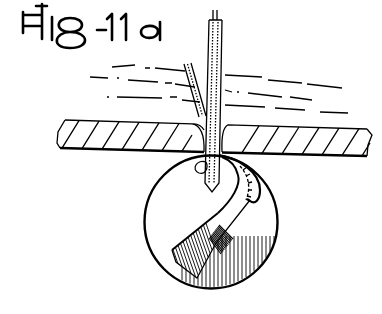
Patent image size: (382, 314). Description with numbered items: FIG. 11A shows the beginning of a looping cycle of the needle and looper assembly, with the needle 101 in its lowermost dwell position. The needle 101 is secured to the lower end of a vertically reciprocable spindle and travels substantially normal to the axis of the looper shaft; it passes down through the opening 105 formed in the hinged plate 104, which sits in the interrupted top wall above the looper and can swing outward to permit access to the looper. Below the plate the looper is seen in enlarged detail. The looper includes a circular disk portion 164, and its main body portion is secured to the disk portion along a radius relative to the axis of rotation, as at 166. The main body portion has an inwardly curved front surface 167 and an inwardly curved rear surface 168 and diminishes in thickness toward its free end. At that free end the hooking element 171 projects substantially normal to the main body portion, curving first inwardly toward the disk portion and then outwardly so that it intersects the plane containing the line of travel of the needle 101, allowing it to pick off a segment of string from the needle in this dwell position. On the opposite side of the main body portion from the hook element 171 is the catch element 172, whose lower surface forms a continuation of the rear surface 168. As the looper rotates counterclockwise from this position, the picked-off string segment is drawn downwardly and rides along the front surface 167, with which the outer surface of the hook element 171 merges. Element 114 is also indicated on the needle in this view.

The needle 101 is at (223, 67).
The needle 114 is at (219, 38).
The opening 105 is at (197, 121).
The hinged plate 104 is at (103, 150).
The circular disk portion 164 is at (265, 248).
The hooking element 171 is at (233, 163).
The catch element 172 is at (259, 200).
The front surface 167 is at (212, 218).
The rear surface 168 is at (228, 240).
The radial securing location of main body portion 166 is at (220, 257).